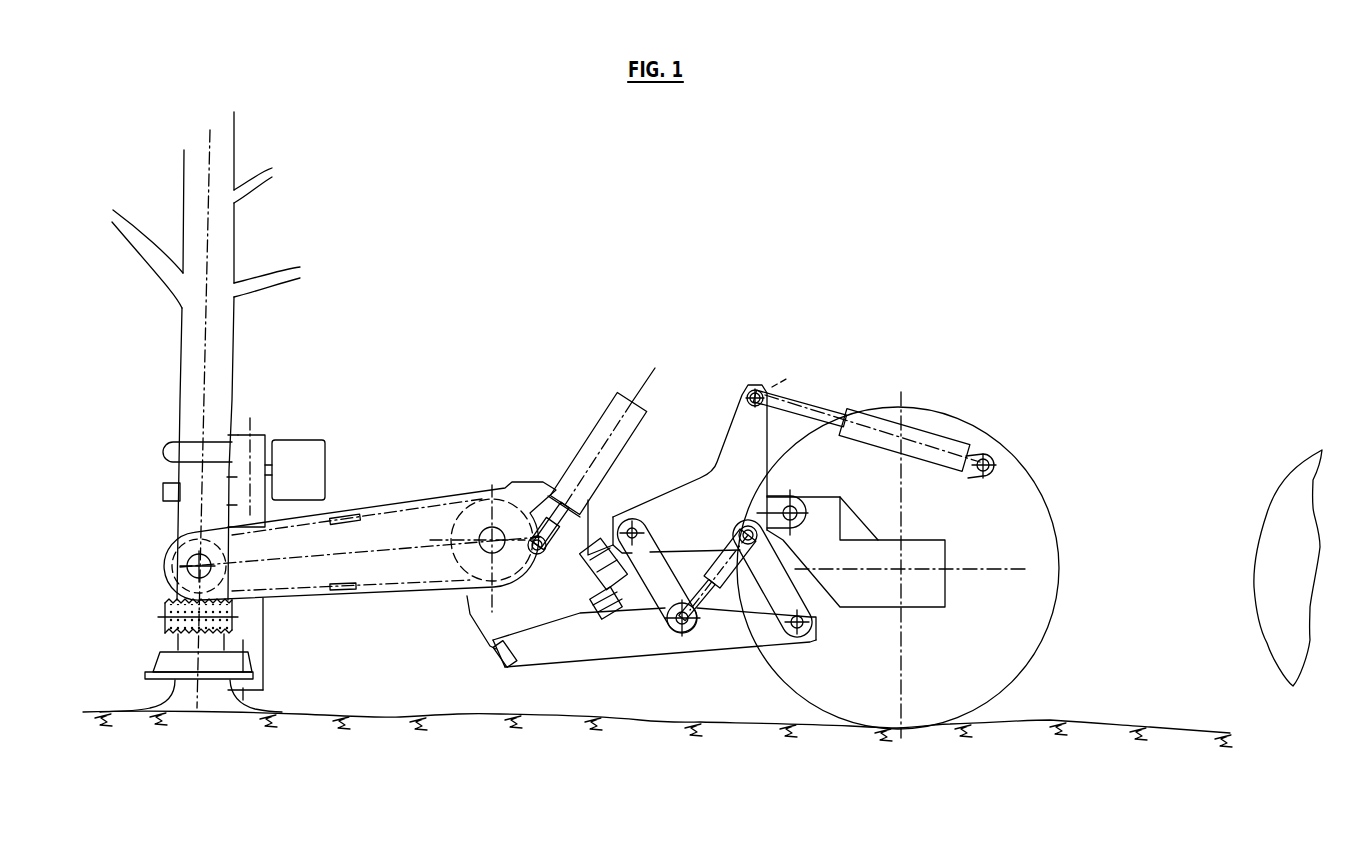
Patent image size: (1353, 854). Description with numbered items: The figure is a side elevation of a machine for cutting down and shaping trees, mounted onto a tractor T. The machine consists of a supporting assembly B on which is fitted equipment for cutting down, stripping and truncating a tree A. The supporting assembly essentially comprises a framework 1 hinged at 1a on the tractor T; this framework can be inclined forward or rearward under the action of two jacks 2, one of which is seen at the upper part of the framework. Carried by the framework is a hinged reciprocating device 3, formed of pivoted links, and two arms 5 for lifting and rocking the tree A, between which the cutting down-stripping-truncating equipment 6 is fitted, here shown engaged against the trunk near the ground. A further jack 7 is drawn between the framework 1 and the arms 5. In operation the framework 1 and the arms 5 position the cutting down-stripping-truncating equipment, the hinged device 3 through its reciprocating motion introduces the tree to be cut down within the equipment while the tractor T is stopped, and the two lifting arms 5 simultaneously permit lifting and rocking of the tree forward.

The framework 1 is at (747, 425).
The hinge 1a is at (800, 505).
The jack 2 is at (885, 410).
The hinged reciprocating device 3 is at (773, 592).
The lifting arm 5 is at (437, 568).
The cutting down-stripping-truncating equipment 6 is at (248, 632).
The hydraulic cylinder for boom 7 is at (593, 437).
The tree A is at (203, 397).
The supporting assembly B is at (667, 447).
The tractor T is at (1298, 508).